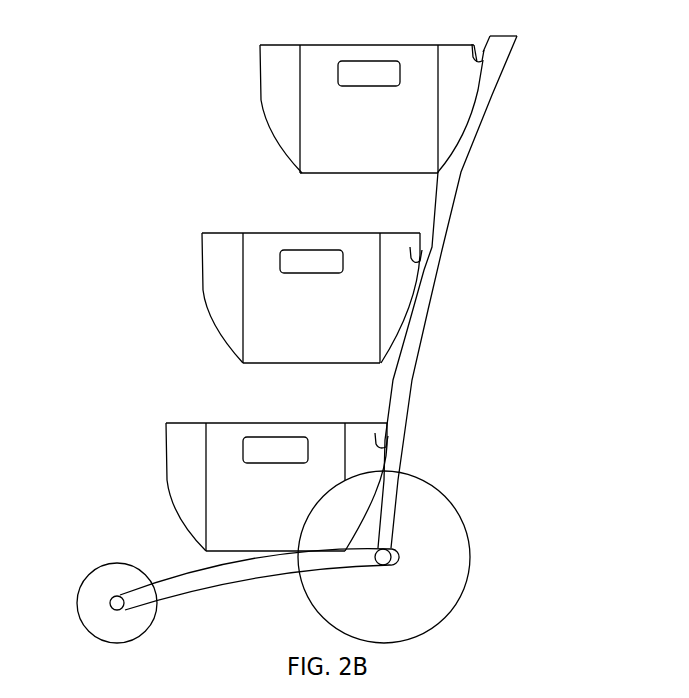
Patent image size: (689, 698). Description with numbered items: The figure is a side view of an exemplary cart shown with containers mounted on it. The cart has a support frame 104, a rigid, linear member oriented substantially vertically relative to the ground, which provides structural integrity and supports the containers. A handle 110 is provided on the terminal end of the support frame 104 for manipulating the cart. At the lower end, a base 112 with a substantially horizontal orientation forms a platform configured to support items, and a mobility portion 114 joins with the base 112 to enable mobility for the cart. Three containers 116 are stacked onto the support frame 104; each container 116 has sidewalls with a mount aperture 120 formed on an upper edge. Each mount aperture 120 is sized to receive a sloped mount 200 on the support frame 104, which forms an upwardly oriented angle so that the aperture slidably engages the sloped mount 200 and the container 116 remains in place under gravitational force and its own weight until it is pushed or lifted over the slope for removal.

The support frame 104 is at (428, 302).
The handle 110 is at (517, 38).
The base 112 is at (197, 572).
The mobility portion 114 is at (78, 600).
The container 116 is at (260, 90).
The mount aperture 120 is at (355, 68).
The sloped mount 200 is at (473, 43).